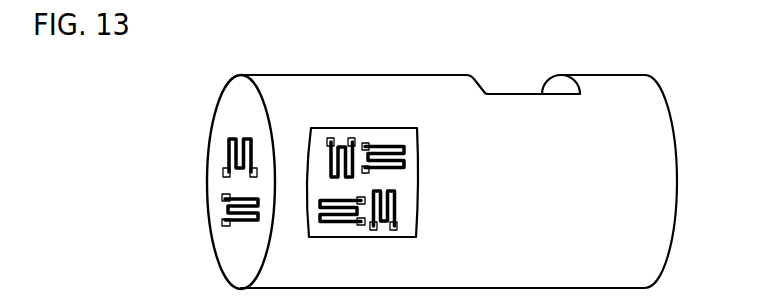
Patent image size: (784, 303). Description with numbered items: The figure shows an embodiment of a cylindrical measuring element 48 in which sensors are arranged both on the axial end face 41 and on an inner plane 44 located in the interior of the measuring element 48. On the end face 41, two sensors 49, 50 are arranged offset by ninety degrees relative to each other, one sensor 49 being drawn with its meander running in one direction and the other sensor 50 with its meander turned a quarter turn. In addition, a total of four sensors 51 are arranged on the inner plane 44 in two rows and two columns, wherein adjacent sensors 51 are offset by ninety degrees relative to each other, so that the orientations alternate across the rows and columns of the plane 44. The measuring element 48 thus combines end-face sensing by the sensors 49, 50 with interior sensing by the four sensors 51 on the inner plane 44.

The measuring element 48 is at (158, 173).
The axial end face 41 is at (238, 92).
The inner plane 44 is at (380, 138).
The sensor 49 is at (237, 225).
The sensor 50 is at (228, 150).
The sensors 51 is at (393, 213).